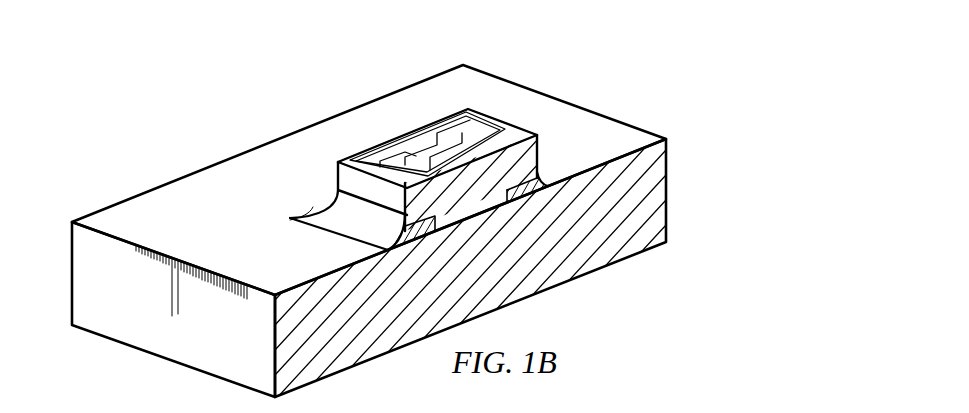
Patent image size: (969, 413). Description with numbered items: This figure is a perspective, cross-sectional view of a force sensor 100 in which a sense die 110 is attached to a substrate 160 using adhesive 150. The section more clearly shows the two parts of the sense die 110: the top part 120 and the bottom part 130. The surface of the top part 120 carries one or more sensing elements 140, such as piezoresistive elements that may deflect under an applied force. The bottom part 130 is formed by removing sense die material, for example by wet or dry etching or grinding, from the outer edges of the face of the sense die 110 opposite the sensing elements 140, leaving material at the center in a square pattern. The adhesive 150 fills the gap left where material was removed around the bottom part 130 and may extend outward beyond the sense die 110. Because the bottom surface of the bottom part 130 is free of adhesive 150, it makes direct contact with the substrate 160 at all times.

The force sensor 100 is at (649, 84).
The sense die 110 is at (513, 104).
The top part 120 is at (348, 236).
The bottom part 130 is at (466, 212).
The sensing elements 140 is at (381, 160).
The adhesive 150 is at (545, 175).
The substrate 160 is at (648, 189).